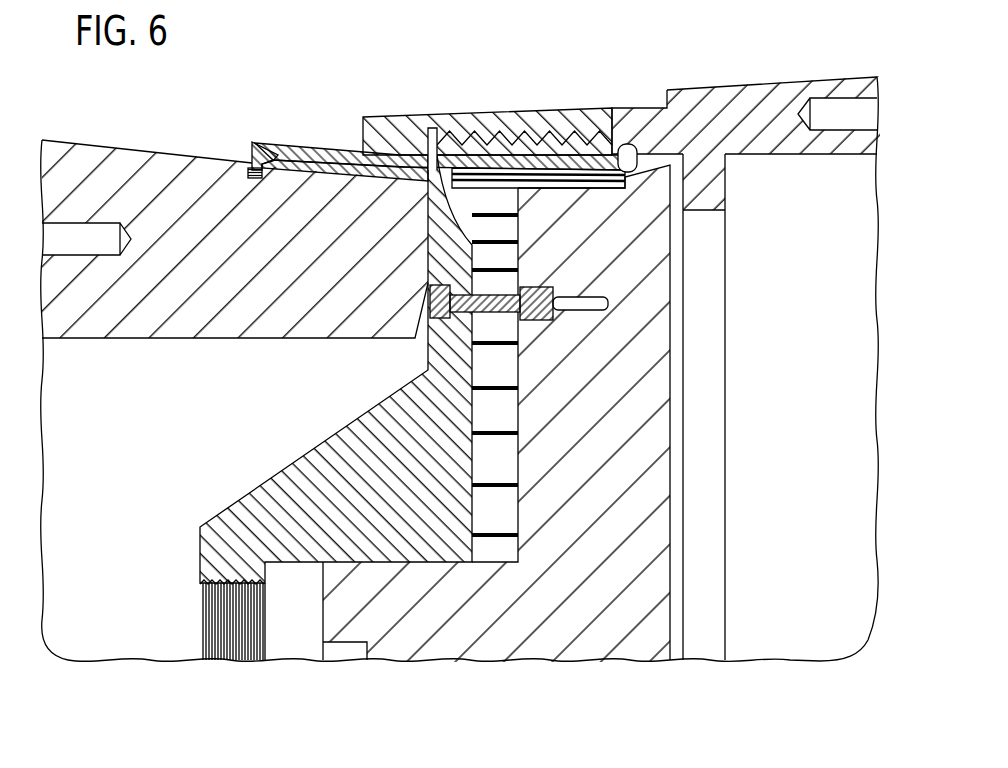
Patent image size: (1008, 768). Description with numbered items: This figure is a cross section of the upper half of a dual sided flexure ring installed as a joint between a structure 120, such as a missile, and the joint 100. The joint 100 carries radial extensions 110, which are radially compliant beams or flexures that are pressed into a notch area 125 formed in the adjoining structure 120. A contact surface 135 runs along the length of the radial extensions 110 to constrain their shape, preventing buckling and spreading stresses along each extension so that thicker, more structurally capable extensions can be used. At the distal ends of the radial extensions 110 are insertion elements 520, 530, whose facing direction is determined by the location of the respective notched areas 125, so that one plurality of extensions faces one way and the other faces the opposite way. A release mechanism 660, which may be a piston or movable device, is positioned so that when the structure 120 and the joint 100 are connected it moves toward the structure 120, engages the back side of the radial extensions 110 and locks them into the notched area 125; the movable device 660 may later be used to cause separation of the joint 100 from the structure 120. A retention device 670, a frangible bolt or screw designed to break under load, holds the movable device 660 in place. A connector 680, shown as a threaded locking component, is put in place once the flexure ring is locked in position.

The joint 100 is at (782, 82).
The radial extensions 110 is at (317, 160).
The structure 120 is at (130, 147).
The notch area 125 is at (252, 180).
The contact surface 135 is at (303, 172).
The insertion element 520 is at (249, 160).
The insertion element 530 is at (631, 162).
The release mechanism 660 is at (640, 400).
The retention device 670 is at (537, 318).
The connector 680 is at (435, 115).